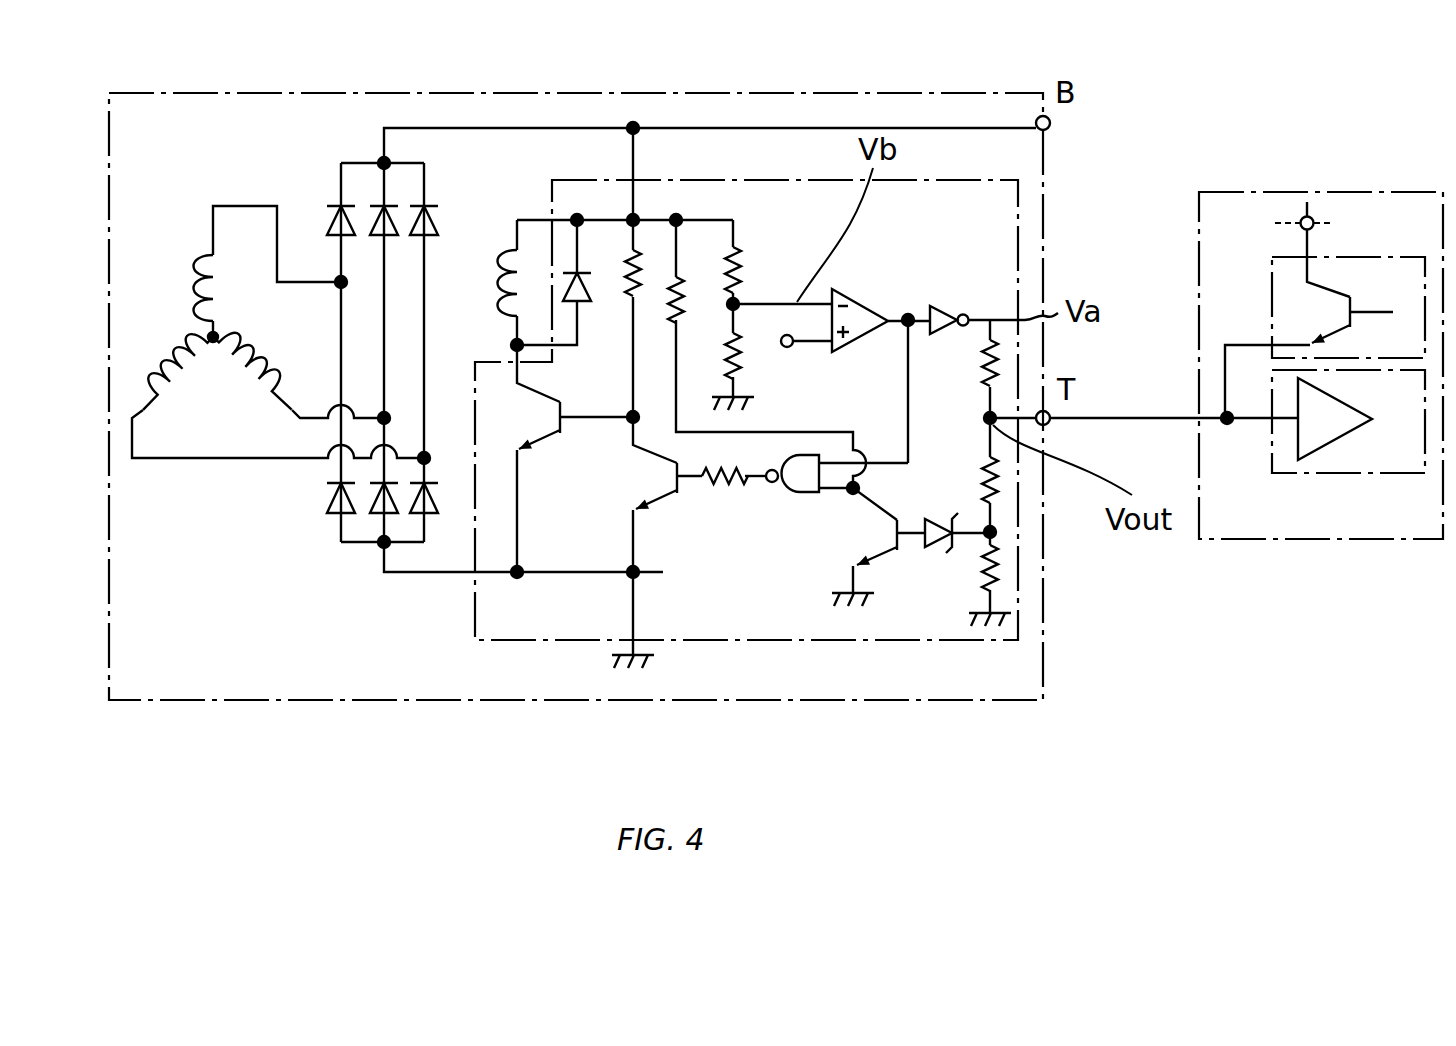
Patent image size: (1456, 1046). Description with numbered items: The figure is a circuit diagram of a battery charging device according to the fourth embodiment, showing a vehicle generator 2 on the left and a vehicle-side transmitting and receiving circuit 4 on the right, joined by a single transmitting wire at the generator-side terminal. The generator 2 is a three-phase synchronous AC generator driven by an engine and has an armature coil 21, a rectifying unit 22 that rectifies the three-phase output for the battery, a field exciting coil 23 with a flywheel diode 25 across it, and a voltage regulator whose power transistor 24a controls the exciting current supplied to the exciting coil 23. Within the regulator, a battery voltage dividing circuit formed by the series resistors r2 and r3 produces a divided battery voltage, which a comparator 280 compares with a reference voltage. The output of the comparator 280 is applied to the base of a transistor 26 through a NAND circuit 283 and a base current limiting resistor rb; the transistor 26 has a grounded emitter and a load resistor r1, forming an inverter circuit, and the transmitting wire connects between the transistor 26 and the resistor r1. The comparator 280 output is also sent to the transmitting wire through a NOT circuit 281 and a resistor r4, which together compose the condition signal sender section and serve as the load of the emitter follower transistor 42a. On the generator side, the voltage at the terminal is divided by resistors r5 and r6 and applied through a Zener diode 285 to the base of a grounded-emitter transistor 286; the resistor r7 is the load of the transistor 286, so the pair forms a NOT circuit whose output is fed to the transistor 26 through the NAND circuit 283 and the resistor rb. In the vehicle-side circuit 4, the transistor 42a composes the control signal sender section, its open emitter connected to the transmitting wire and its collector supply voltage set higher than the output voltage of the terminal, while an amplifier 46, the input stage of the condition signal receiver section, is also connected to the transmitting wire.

The generator for a vehicle 2 is at (338, 703).
The armature coil 21 is at (208, 430).
The rectifying unit 22 is at (358, 265).
The field exciting coil 23 is at (503, 292).
The power transistor of the voltage regulator 24a is at (545, 435).
The flywheel diode 25 is at (583, 302).
The transistor 26 is at (665, 495).
The base current limiting resistor rb is at (717, 481).
The load resistor r1 is at (627, 277).
The voltage dividing resistor r2 is at (750, 252).
The voltage dividing resistor r3 is at (740, 358).
The resistor r4 is at (985, 357).
The voltage dividing resistor r5 is at (983, 478).
The voltage dividing resistor r6 is at (993, 568).
The resistor r7 is at (690, 297).
The comparator 280 is at (866, 315).
The NOT circuit 281 is at (952, 310).
The NAND circuit 283 is at (803, 497).
The Zener diode 285 is at (928, 548).
The transistor 286 is at (883, 548).
The vehicle-side transmitting and receiving circuit 4 is at (1283, 190).
The emitter follower transistor 42a is at (1270, 298).
The amplifier 46 is at (1325, 435).